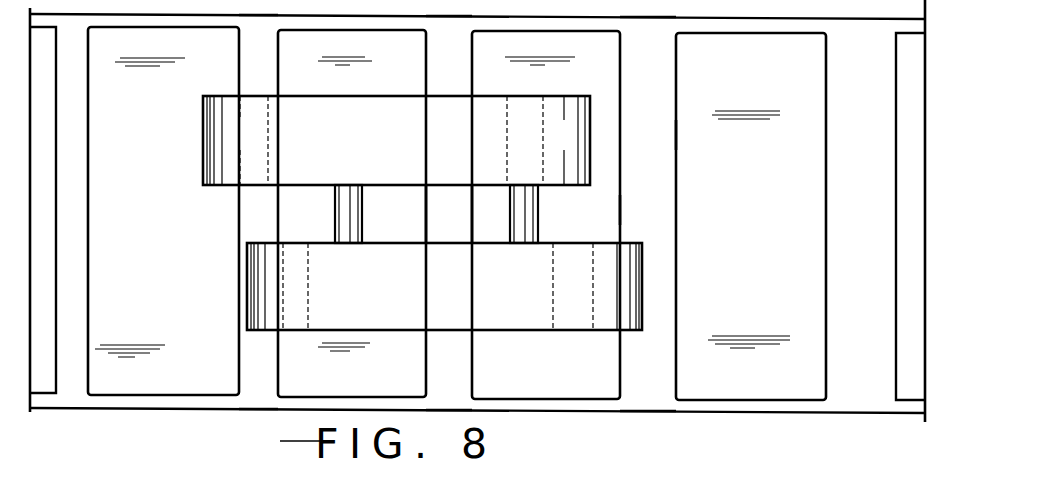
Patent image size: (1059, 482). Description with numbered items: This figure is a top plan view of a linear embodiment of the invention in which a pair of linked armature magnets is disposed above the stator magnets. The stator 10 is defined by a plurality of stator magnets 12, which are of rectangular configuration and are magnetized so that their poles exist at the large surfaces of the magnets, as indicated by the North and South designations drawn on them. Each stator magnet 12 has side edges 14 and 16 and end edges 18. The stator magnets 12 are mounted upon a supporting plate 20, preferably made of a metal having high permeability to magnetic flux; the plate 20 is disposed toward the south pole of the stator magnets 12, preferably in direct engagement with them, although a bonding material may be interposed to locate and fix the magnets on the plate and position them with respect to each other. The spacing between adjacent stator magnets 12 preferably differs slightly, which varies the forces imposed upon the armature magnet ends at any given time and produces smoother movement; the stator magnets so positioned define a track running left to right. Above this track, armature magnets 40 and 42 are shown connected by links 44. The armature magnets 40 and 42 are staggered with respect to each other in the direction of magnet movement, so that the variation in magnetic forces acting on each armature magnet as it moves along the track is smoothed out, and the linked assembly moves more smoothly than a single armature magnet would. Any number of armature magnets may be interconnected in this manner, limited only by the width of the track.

The stator 10 is at (722, 415).
The stator magnets 12 is at (457, 213).
The side edge 14 is at (620, 213).
The side edge 16 is at (676, 134).
The end edges 18 is at (505, 30).
The supporting plate 20 is at (876, 181).
The armature magnet 40 is at (394, 150).
The armature magnet 42 is at (432, 296).
The links 44 is at (343, 244).